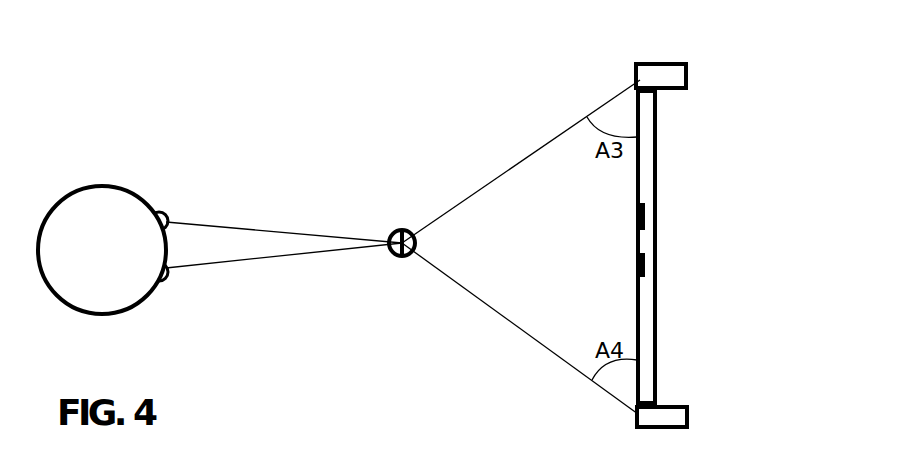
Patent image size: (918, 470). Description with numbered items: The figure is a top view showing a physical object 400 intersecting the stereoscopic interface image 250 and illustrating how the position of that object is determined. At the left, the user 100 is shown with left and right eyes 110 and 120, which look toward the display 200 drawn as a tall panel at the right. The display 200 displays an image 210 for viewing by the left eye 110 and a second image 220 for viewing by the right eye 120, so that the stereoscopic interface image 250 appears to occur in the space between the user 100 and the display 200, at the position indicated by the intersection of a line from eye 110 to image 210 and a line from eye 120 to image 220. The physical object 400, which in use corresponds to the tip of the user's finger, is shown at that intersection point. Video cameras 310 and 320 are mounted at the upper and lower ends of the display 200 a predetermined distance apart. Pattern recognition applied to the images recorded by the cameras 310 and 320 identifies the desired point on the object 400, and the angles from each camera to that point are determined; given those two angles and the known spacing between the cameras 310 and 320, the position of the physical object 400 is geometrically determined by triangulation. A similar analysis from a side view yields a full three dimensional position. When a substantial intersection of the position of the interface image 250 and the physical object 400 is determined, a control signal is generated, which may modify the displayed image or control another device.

The user 100 is at (98, 186).
The left eye 110 is at (160, 210).
The right eye 120 is at (160, 284).
The physical object 400 is at (390, 239).
The stereoscopic interface image 250 is at (393, 254).
The display 200 is at (657, 130).
The image for the left eye 210 is at (645, 277).
The image for the right eye 220 is at (645, 230).
The video camera 310 is at (688, 78).
The video camera 320 is at (689, 418).